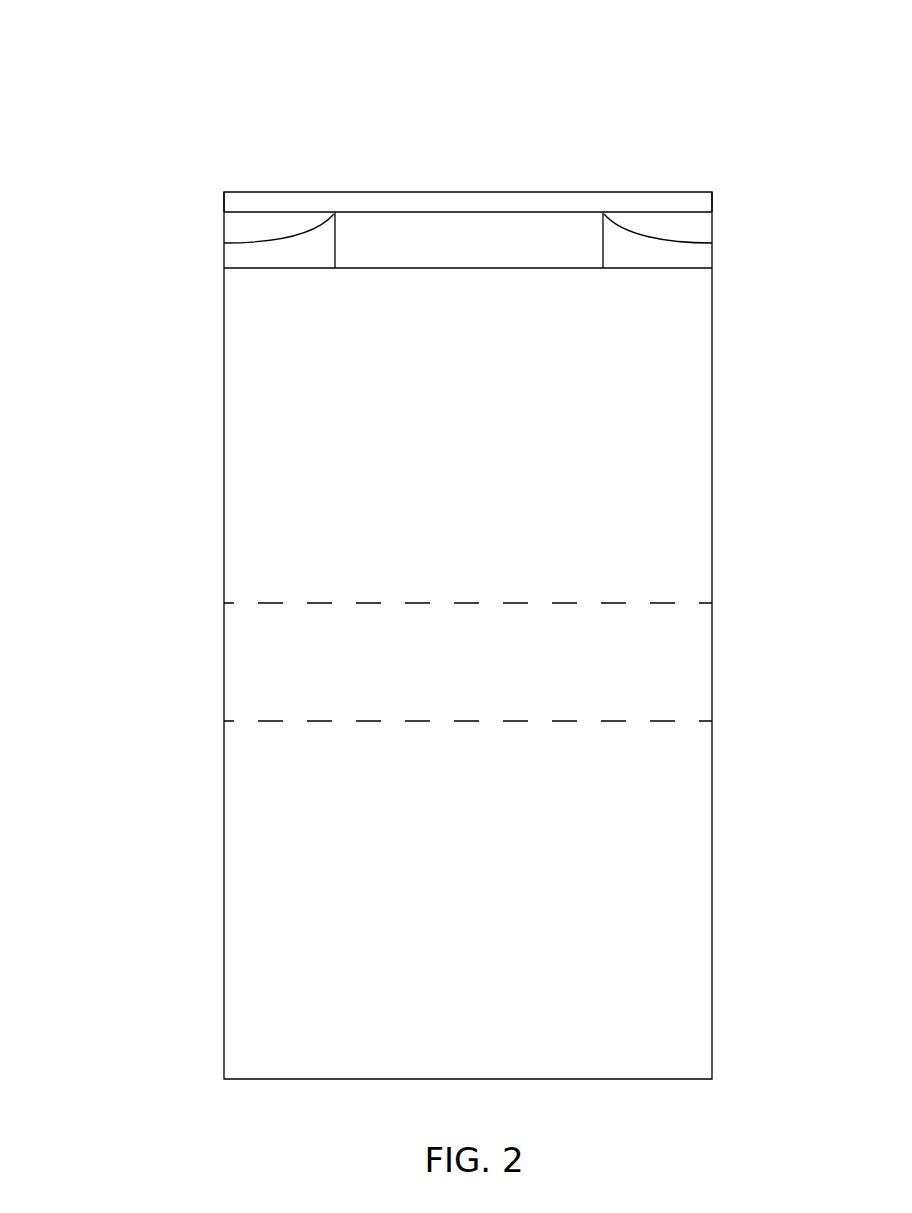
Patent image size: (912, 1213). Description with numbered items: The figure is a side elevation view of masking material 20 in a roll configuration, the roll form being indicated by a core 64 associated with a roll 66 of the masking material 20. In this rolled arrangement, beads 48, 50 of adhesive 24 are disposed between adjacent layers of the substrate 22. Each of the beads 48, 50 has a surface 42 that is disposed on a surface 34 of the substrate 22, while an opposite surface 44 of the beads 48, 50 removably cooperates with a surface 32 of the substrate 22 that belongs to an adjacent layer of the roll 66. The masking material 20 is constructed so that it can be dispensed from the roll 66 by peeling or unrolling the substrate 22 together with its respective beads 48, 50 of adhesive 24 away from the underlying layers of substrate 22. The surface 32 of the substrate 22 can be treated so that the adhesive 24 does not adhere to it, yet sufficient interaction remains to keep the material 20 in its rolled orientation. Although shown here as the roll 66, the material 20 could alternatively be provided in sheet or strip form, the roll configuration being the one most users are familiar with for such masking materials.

The masking material 20 is at (108, 142).
The substrate 22 is at (404, 204).
The adhesive 24 is at (236, 228).
The surface 32 is at (518, 192).
The surface 34 is at (444, 251).
The surface 42 is at (297, 214).
The surface 44 is at (280, 255).
The bead 48 is at (717, 212).
The bead 50 is at (243, 211).
The core 64 is at (662, 605).
The roll 66 is at (284, 790).